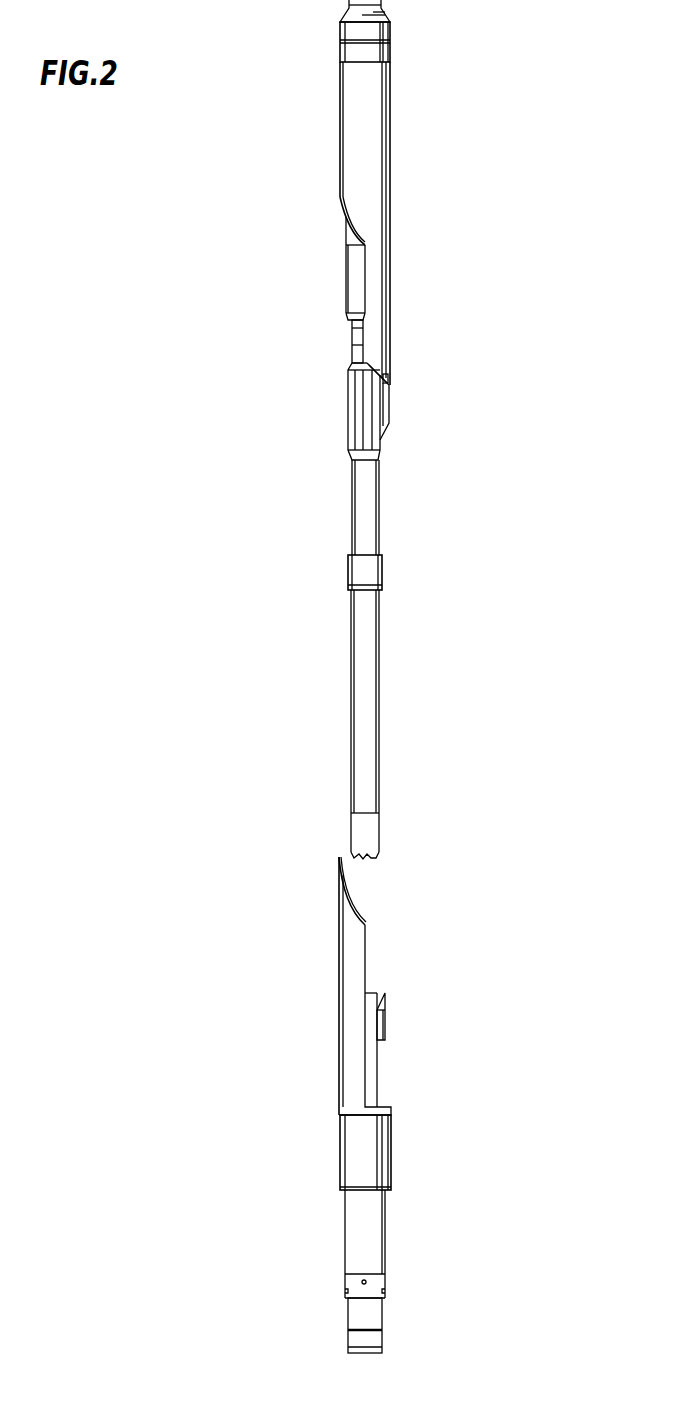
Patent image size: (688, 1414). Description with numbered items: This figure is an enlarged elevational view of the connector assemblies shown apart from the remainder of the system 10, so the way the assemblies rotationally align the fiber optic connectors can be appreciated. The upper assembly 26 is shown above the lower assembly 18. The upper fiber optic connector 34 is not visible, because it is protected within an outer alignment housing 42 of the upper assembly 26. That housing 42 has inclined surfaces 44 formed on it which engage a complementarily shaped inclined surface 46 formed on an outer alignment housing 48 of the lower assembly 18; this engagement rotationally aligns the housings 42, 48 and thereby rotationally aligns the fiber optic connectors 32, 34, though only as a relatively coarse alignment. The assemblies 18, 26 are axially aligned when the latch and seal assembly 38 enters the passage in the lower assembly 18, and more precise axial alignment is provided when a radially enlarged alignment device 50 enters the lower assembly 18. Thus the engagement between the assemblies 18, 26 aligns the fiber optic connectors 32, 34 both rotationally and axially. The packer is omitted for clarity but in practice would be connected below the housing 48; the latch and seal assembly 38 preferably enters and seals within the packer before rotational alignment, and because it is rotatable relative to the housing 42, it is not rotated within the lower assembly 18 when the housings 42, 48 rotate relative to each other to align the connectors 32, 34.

The system 10 is at (540, 141).
The lower assembly 18 is at (337, 1163).
The upper assembly 26 is at (394, 315).
The fiber optic connector 32 is at (387, 1027).
The upper fiber optic connector 34 is at (390, 385).
The latch and seal assembly 38 is at (380, 833).
The outer alignment housing 42 is at (352, 345).
The inclined surfaces 44 is at (347, 232).
The inclined surface 46 is at (355, 897).
The outer alignment housing 48 is at (338, 1080).
The alignment device 50 is at (349, 430).